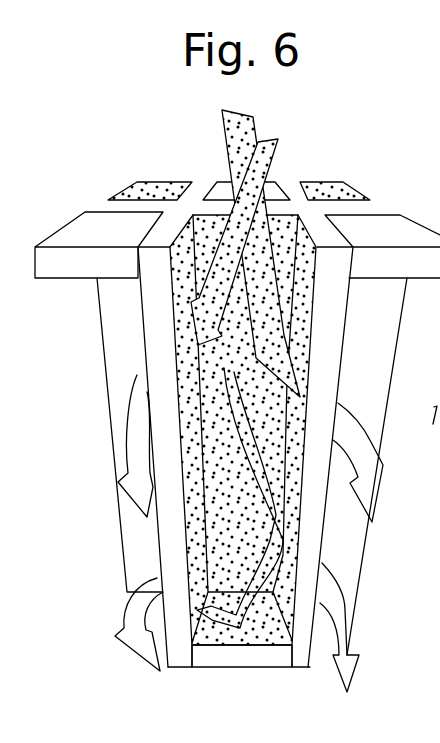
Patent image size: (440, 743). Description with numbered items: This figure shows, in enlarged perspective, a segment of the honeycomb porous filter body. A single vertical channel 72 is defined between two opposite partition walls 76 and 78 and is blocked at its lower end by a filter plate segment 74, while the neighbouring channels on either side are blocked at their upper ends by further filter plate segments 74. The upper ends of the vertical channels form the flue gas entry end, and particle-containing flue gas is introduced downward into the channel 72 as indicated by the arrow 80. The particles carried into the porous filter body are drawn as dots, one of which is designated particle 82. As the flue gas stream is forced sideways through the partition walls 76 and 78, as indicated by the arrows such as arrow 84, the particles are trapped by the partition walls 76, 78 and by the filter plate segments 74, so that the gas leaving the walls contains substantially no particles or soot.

The channel 72 is at (284, 239).
The filter plate segment 74 is at (103, 232).
The partition wall 76 is at (327, 377).
The partition wall 78 is at (157, 362).
The arrow 80 is at (228, 147).
The particle 82 is at (198, 547).
The arrow 84 is at (132, 451).